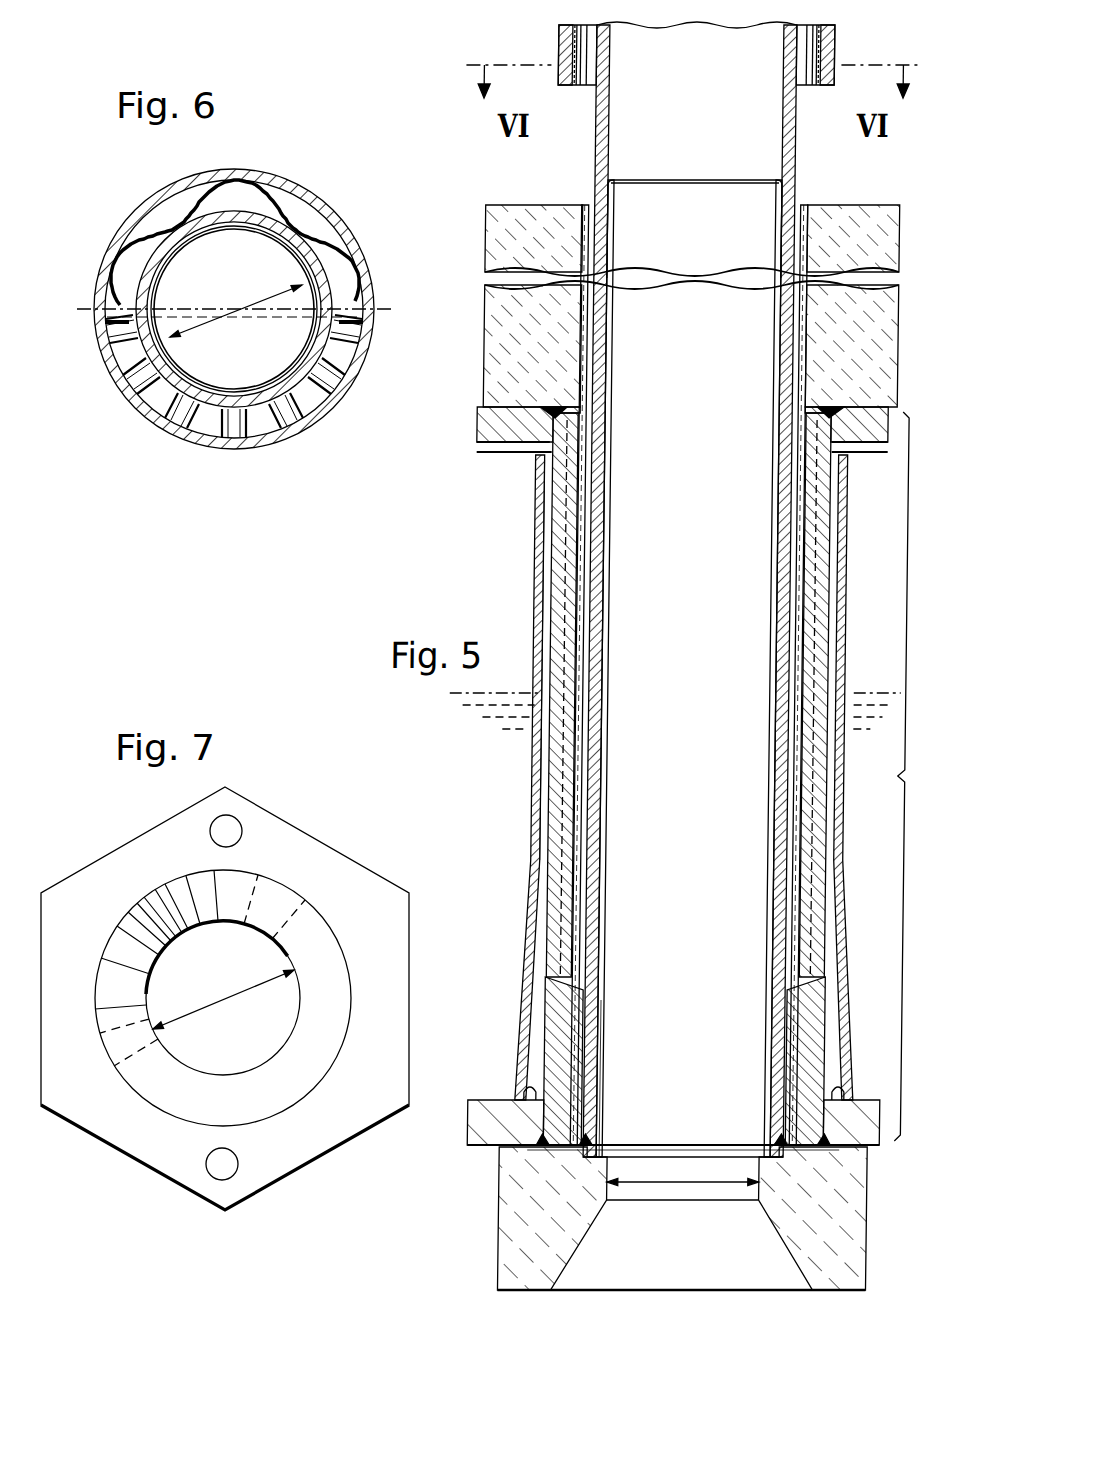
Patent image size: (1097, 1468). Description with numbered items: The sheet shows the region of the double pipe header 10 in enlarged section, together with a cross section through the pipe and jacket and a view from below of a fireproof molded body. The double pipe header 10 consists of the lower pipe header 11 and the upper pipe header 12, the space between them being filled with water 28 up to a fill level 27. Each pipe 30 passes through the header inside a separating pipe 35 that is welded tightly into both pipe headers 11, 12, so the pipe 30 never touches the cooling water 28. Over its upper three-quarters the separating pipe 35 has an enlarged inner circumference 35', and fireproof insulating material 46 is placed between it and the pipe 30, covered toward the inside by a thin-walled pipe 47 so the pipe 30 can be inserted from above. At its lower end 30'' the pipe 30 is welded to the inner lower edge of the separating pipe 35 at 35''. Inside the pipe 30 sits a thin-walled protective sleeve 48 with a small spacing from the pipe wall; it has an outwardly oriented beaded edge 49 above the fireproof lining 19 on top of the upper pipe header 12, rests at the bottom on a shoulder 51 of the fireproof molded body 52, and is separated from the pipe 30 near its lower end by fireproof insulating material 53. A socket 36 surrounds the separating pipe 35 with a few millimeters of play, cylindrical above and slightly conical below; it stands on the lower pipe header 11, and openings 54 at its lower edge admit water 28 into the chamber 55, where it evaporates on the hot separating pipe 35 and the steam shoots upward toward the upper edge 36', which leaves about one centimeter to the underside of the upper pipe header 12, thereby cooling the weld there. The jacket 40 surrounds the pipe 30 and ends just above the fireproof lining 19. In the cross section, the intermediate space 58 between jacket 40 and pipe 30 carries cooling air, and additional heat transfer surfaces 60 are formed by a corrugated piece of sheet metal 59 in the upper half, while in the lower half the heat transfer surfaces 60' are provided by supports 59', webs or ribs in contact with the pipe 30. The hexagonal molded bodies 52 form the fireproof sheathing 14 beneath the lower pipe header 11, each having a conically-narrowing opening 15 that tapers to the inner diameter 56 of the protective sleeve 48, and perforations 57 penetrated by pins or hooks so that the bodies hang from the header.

In FIG. 5, the double pipe header 10 is at (884, 776).
In FIG. 5, the lower pipe header 11 is at (496, 1125).
In FIG. 5, the upper pipe header 12 is at (493, 424).
In FIG. 5, the fireproof sheathing 14 is at (504, 1268).
In FIG. 5, the conically-narrowing opening 15 is at (594, 1247).
In FIG. 7, the conically-narrowing opening 15 is at (165, 1100).
In FIG. 5, the fireproof lining 19 is at (489, 264).
In FIG. 5, the fill level 27 is at (500, 693).
In FIG. 5, the water 28 is at (510, 784).
In FIG. 5, the pipe 30 is at (717, 589).
In FIG. 6, the pipe 30 is at (280, 309).
In FIG. 5, the lower end of the pipe 30'' is at (734, 1133).
In FIG. 5, the separating pipe 35 is at (643, 695).
In FIG. 5, the inner circumference of the separating pipe 35' is at (636, 697).
In FIG. 5, the weld point at the lower edge of the separating pipe 35'' is at (764, 1208).
In FIG. 5, the socket 36 is at (662, 777).
In FIG. 5, the upper edge of the socket 36' is at (674, 470).
In FIG. 5, the jacket 40 is at (838, 50).
In FIG. 6, the jacket 40 is at (270, 178).
In FIG. 5, the fireproof insulating material 46 is at (586, 680).
In FIG. 5, the thin-walled pipe 47 is at (590, 556).
In FIG. 5, the protective sleeve 48 is at (616, 622).
In FIG. 6, the protective sleeve 48 is at (284, 247).
In FIG. 5, the beaded edge 49 is at (612, 178).
In FIG. 6, the beaded edge 49 is at (158, 275).
In FIG. 5, the shoulder 51 is at (610, 1163).
In FIG. 5, the fireproof molded body 52 is at (524, 1222).
In FIG. 7, the fireproof molded body 52 is at (315, 840).
In FIG. 5, the fireproof insulating material 53 is at (620, 1067).
In FIG. 5, the openings 54 is at (534, 1090).
In FIG. 5, the chamber 55 is at (552, 1025).
In FIG. 5, the inner diameter of the protective sleeve 56 is at (704, 1186).
In FIG. 6, the inner diameter of the protective sleeve 56 is at (210, 318).
In FIG. 7, the inner diameter of the protective sleeve 56 is at (213, 1008).
In FIG. 7, the perforations 57 is at (210, 832).
In FIG. 6, the intermediate space 58 is at (150, 395).
In FIG. 5, the piece of sheet metal 59 is at (698, 85).
In FIG. 6, the piece of sheet metal 59 is at (222, 238).
In FIG. 6, the supports 59' is at (163, 459).
In FIG. 6, the heat transfer surfaces 60 is at (345, 191).
In FIG. 6, the heat transfer surfaces 60' is at (245, 387).